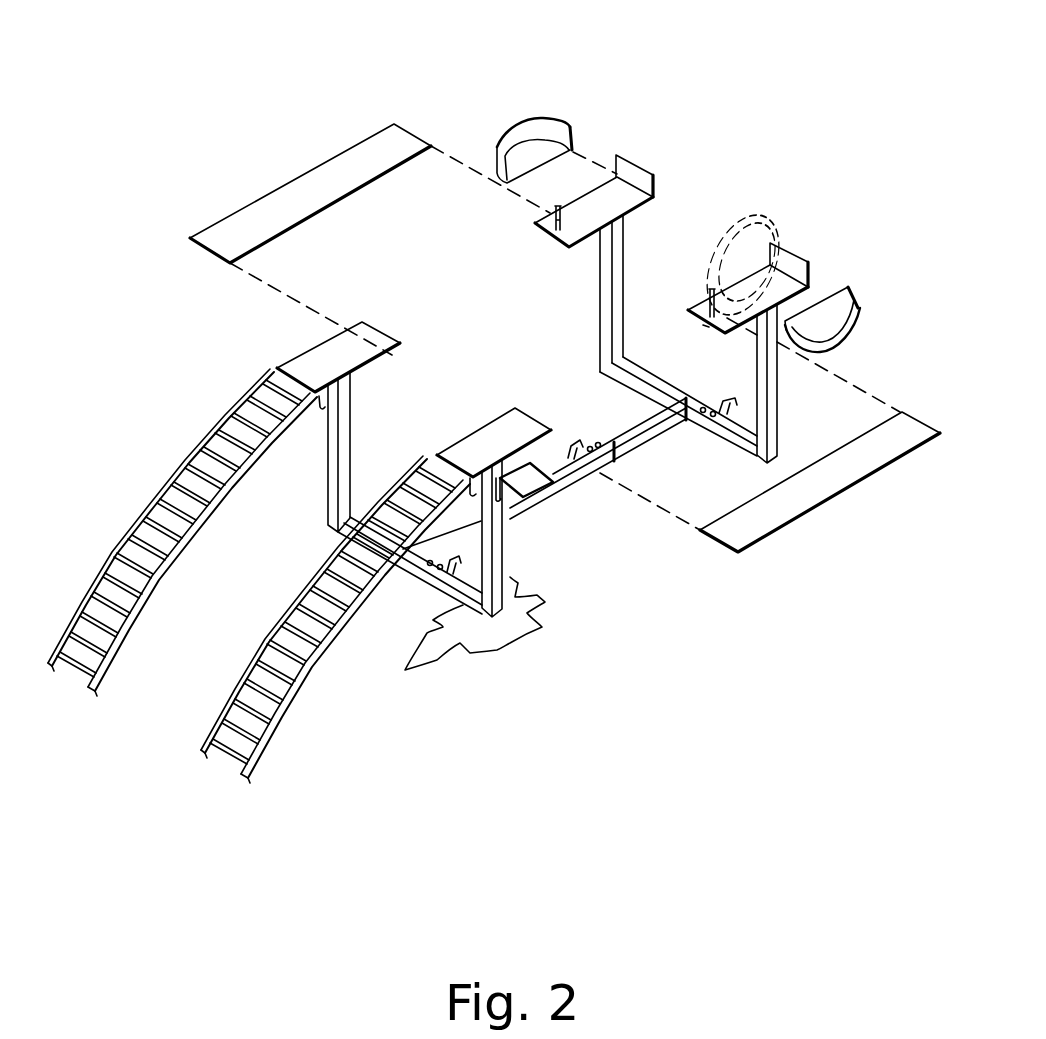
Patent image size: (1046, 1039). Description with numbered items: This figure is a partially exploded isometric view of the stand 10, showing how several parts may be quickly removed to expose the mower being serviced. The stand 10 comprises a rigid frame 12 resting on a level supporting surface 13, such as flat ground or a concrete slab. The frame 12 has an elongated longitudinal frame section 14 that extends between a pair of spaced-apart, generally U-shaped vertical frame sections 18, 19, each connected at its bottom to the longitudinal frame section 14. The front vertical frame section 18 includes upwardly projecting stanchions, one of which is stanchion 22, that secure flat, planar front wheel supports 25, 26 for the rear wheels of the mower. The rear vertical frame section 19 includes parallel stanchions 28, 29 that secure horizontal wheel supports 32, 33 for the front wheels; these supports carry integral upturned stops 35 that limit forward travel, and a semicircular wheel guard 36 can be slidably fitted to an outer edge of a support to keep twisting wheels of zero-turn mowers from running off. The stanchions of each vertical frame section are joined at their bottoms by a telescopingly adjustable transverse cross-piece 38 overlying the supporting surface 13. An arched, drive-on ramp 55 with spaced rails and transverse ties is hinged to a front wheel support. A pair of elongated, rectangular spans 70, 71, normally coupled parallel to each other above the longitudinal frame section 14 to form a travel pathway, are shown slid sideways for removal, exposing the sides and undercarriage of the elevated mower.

The stand 10 is at (638, 118).
The rigid frame 12 is at (605, 415).
The supporting surface 13 is at (494, 648).
The longitudinal frame section 14 is at (618, 473).
The vertical frame section 18 is at (345, 452).
The vertical frame section 19 is at (791, 428).
The stanchion 22 is at (333, 460).
The wheel support 25 is at (318, 357).
The wheel support 26 is at (487, 437).
The stanchion 28 is at (608, 290).
The stanchion 29 is at (796, 364).
The wheel support 32 is at (626, 204).
The wheel support 33 is at (806, 290).
The upturned stop 35 is at (637, 165).
The wheel guard 36 is at (538, 118).
The cross-piece 38 is at (698, 440).
The arched ramp 55 is at (130, 508).
The span 70 is at (330, 145).
The span 71 is at (826, 518).